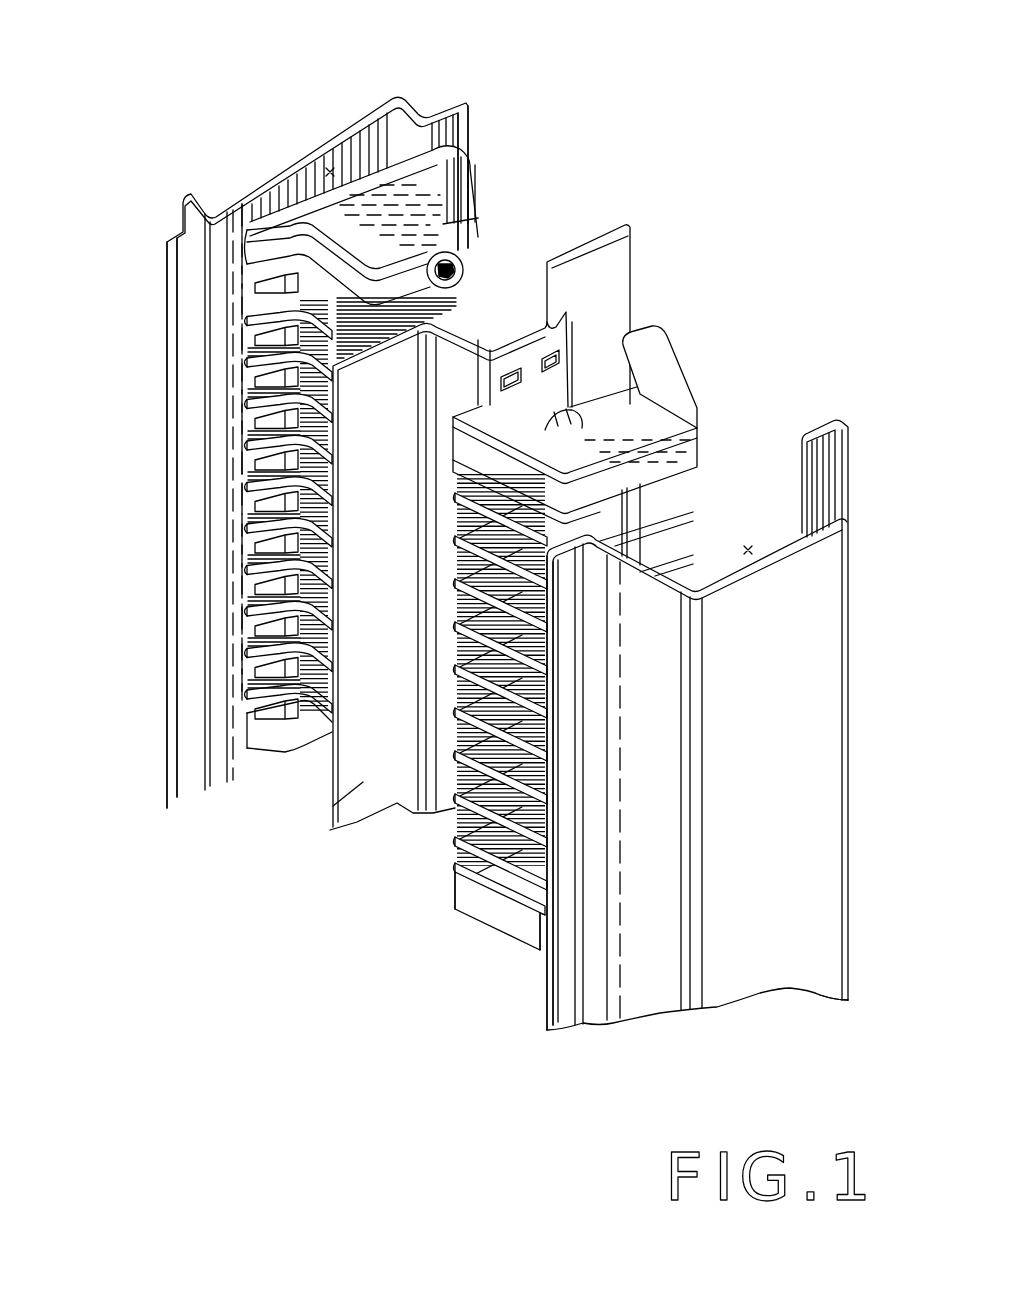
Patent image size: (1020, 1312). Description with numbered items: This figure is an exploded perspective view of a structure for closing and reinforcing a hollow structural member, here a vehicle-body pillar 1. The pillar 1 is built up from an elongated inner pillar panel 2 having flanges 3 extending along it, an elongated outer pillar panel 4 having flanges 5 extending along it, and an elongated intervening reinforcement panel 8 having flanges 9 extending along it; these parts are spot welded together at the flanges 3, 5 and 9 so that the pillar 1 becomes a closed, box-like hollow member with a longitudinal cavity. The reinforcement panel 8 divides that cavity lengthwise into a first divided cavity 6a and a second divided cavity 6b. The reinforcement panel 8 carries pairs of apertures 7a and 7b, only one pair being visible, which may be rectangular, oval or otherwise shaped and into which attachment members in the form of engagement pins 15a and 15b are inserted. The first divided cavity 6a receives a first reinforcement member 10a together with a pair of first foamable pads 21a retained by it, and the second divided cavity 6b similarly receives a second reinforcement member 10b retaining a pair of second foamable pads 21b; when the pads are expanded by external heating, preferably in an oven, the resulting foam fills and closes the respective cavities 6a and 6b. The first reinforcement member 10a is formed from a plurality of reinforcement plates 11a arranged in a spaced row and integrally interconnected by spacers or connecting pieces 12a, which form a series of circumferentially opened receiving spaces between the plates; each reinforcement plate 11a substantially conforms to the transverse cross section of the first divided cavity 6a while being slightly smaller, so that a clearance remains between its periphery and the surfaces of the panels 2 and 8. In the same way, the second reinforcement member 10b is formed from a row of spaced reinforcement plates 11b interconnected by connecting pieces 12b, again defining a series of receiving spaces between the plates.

The pillar 1 is at (868, 757).
The inner pillar panel 2 is at (290, 128).
The flanges 3 is at (178, 232).
The outer pillar panel 4 is at (802, 700).
The flanges 5 is at (826, 444).
The first divided cavity 6a is at (331, 168).
The second divided cavity 6b is at (749, 548).
The apertures 7a is at (543, 355).
The apertures 7b is at (500, 372).
The reinforcement panel 8 is at (614, 322).
The flanges 9 is at (592, 243).
The first reinforcement member 10a is at (196, 553).
The second reinforcement member 10b is at (563, 669).
The reinforcement plates 11a is at (245, 238).
The reinforcement plates 11b is at (660, 355).
The connecting pieces 12a is at (247, 485).
The connecting pieces 12b is at (653, 547).
The engagement pins 15a is at (452, 252).
The engagement pins 15b is at (556, 404).
The first foamable pads 21a is at (310, 260).
The second foamable pads 21b is at (666, 458).